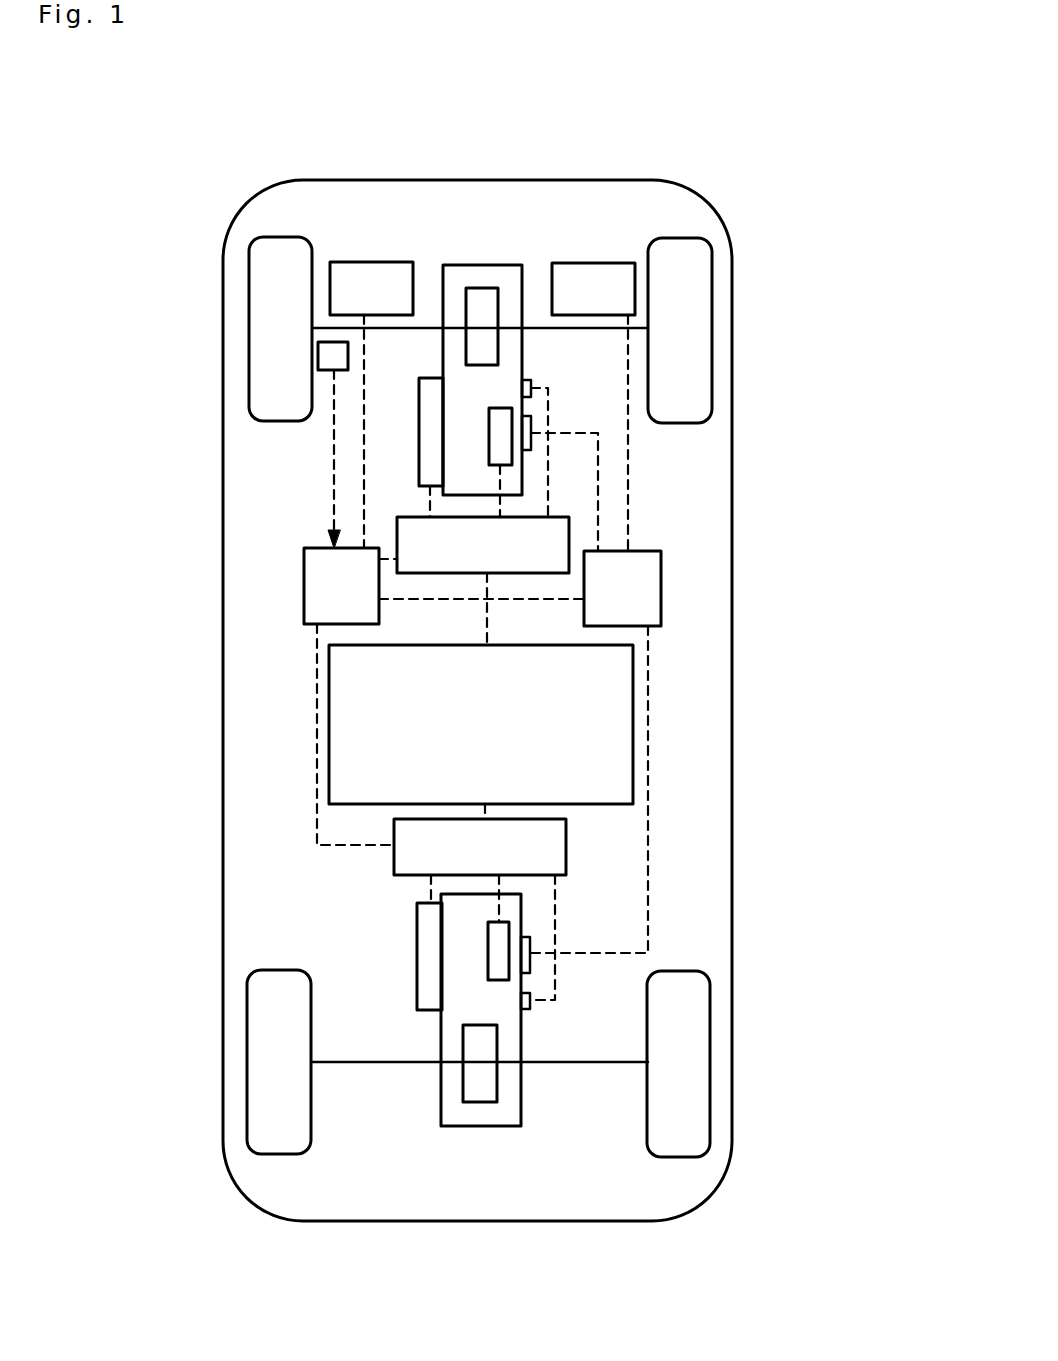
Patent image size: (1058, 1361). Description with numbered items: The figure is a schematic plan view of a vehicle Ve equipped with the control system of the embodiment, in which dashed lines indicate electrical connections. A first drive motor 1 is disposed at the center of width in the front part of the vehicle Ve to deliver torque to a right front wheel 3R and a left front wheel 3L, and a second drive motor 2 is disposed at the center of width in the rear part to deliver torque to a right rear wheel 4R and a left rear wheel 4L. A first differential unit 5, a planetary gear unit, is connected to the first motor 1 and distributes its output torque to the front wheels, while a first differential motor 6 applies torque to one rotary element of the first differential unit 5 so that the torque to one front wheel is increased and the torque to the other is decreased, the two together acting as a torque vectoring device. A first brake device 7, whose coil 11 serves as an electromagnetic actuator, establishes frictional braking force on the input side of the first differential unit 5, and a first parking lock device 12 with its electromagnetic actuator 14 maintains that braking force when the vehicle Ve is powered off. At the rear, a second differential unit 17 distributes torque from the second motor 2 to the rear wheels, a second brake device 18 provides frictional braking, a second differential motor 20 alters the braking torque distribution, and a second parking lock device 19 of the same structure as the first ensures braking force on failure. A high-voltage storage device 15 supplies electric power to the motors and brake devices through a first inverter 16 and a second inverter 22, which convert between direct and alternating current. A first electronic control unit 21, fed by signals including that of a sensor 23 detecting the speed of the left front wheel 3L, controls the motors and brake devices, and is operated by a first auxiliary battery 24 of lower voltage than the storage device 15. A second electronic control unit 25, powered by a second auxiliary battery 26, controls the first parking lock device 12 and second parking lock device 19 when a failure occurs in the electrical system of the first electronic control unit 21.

The vehicle Ve is at (781, 170).
The first drive motor 1 is at (427, 413).
The second drive motor 2 is at (428, 949).
The left front wheel 3L is at (278, 245).
The right front wheel 3R is at (677, 250).
The left rear wheel 4L is at (273, 1140).
The right rear wheel 4R is at (678, 1143).
The first differential unit 5 is at (480, 282).
The first differential motor 6 is at (527, 377).
The first brake device 7 is at (530, 297).
The coil 11 is at (501, 410).
The first parking lock device 12 is at (676, 435).
The electromagnetic actuator 14 is at (532, 419).
The storage device 15 is at (615, 697).
The first inverter 16 is at (560, 528).
The second differential unit 17 is at (480, 1092).
The second brake device 18 is at (495, 967).
The second parking lock device 19 is at (527, 963).
The second differential motor 20 is at (530, 1010).
The first electronic control unit 21 is at (327, 591).
The second inverter 22 is at (405, 857).
The sensor 23 is at (328, 364).
The first auxiliary battery 24 is at (372, 272).
The second electronic control unit 25 is at (645, 589).
The second auxiliary battery 26 is at (593, 276).